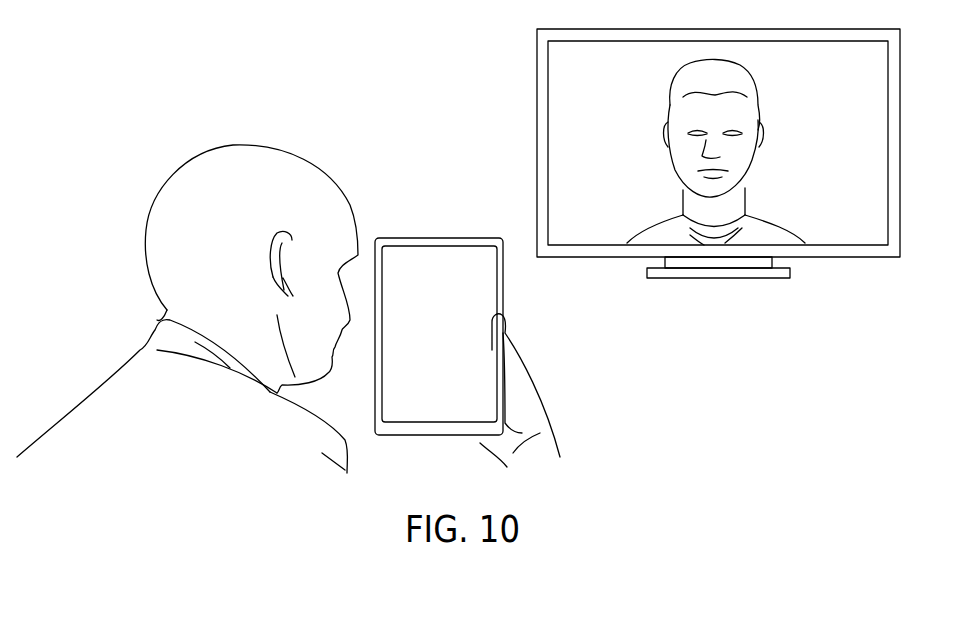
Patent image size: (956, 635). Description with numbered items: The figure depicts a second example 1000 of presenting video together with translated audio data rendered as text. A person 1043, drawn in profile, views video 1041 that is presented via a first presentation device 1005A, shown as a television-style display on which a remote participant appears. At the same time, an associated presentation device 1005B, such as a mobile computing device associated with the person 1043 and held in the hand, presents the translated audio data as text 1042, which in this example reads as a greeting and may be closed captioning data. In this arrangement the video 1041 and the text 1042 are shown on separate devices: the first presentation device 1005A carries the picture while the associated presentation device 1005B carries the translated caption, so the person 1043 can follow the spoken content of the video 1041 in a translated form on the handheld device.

The second example 1000 is at (167, 103).
The person 1043 is at (145, 228).
The first presentation device 1005A is at (537, 72).
The video 1041 is at (548, 118).
The associated presentation device 1005B is at (428, 238).
The text 1042 is at (502, 308).